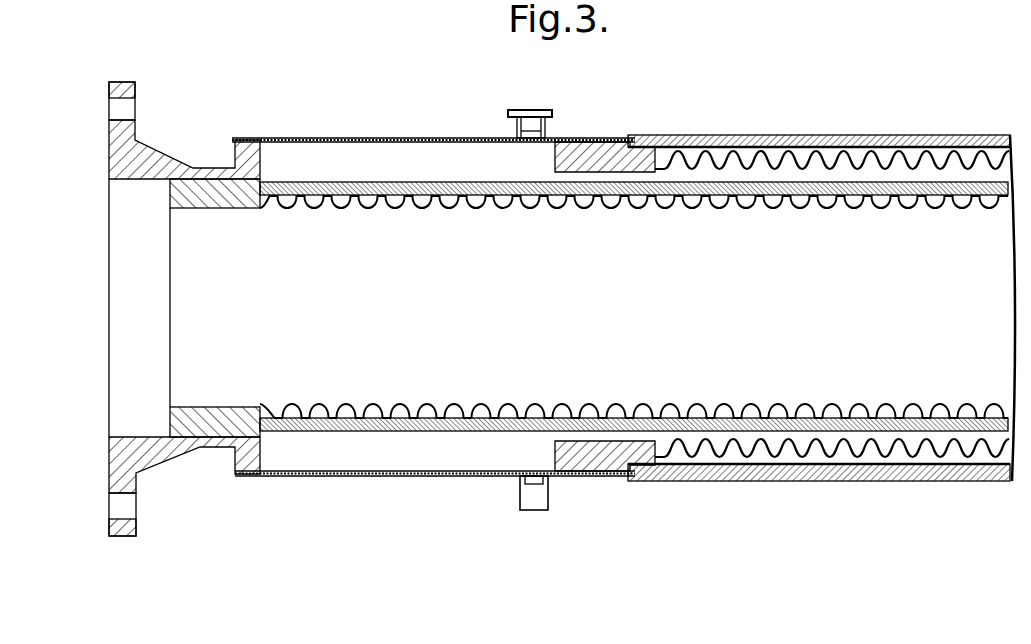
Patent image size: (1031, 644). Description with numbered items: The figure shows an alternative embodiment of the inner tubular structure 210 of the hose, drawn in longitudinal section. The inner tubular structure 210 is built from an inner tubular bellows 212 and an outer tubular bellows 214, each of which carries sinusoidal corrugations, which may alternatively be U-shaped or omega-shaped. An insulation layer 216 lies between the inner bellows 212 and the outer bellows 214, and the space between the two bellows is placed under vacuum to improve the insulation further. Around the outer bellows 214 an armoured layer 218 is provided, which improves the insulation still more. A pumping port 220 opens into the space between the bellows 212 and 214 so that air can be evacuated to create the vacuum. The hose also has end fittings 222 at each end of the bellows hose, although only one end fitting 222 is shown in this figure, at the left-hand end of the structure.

The inner tubular structure 210 is at (853, 108).
The inner tubular bellows 212 is at (743, 405).
The outer tubular bellows 214 is at (693, 208).
The insulation layer 216 is at (880, 417).
The armoured layer 218 is at (930, 135).
The pumping port 220 is at (530, 108).
The end fitting 222 is at (160, 153).